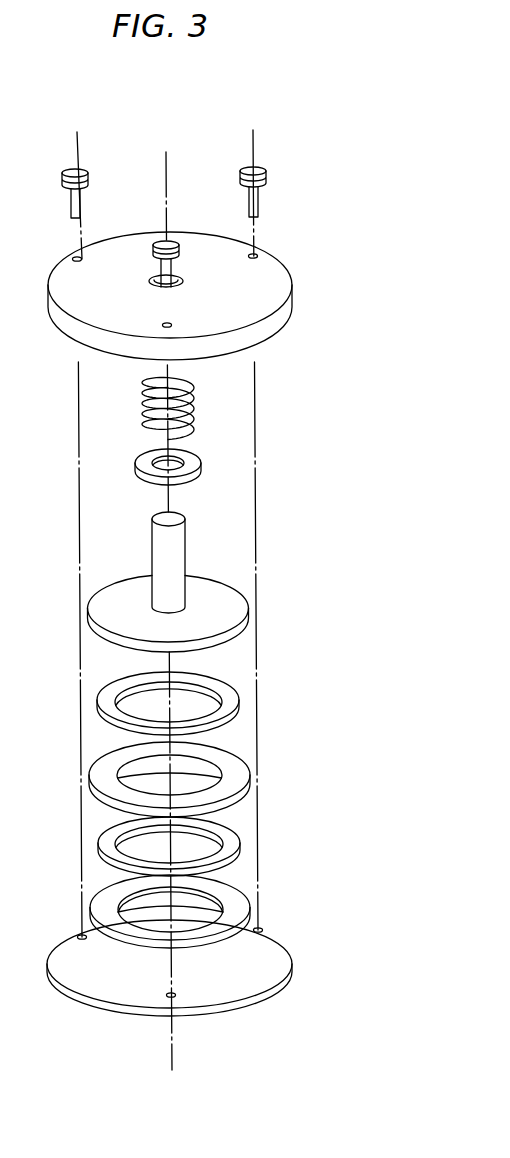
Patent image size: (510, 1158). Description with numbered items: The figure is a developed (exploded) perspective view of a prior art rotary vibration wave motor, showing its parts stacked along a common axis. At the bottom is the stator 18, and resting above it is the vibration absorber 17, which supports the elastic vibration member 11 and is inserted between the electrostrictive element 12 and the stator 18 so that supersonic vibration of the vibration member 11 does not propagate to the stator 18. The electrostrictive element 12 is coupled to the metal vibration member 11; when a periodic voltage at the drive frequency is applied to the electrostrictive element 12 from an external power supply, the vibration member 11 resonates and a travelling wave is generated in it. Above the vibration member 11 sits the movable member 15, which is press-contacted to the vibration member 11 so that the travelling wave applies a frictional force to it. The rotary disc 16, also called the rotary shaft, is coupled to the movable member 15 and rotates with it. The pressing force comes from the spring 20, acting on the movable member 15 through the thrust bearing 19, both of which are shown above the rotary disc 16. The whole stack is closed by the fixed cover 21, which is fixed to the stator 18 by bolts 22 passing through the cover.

The elastic vibration member 11 is at (242, 775).
The electrostrictive element 12 is at (233, 840).
The movable member 15 is at (233, 697).
The rotary disc 16 is at (240, 603).
The vibration absorber 17 is at (240, 900).
The stator 18 is at (278, 953).
The thrust bearing 19 is at (197, 458).
The spring 20 is at (190, 405).
The fixed cover 21 is at (275, 277).
The bolts 22 is at (88, 173).